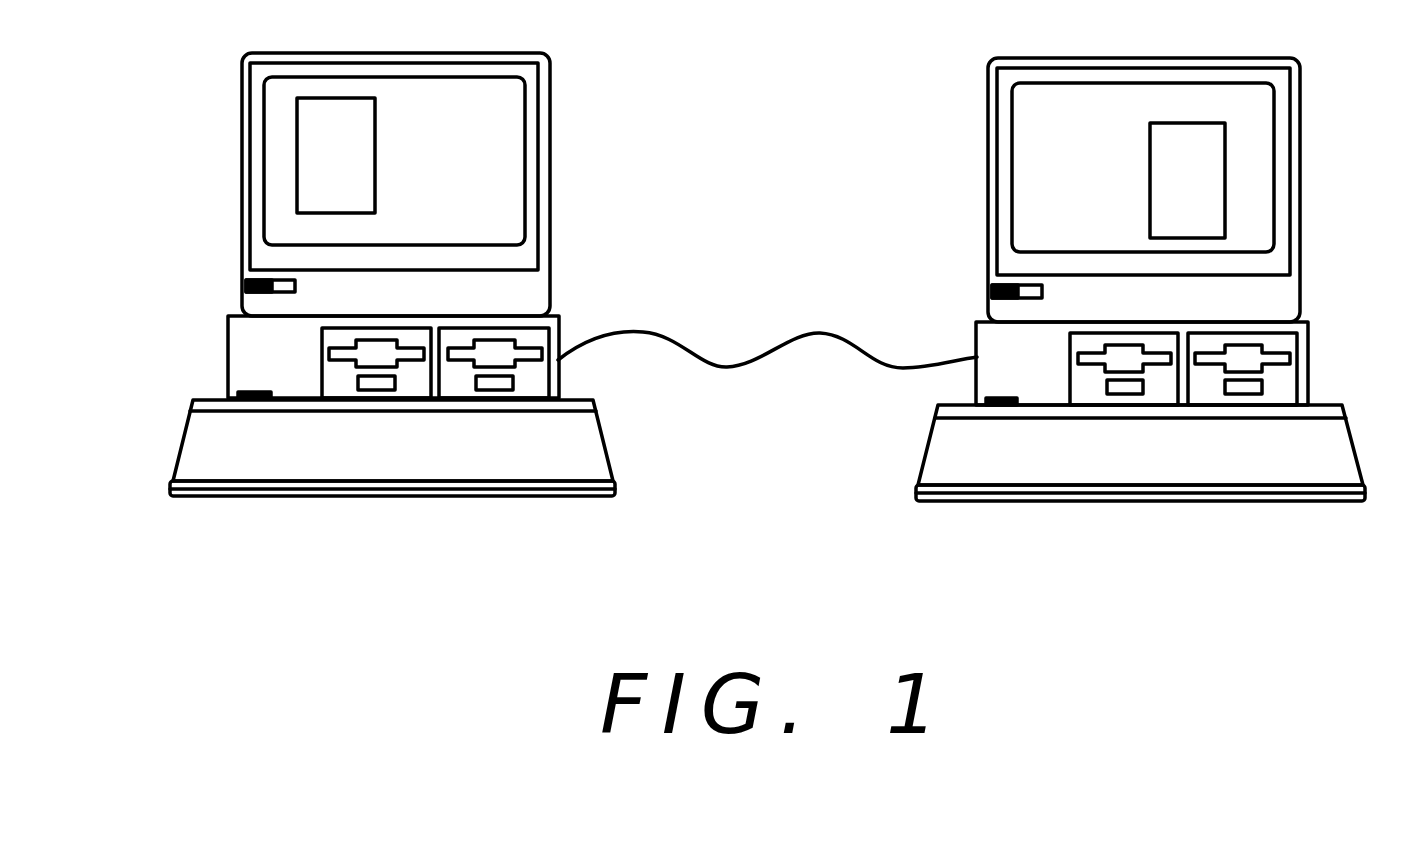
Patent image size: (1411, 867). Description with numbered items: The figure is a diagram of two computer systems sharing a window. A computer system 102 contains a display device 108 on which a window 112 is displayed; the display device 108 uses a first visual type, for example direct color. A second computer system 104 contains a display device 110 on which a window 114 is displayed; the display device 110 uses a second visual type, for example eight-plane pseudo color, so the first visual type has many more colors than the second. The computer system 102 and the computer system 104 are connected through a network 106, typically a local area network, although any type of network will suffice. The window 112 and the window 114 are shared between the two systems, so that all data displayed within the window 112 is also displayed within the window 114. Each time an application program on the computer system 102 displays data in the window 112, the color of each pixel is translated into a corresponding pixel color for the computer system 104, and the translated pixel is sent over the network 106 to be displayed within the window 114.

The computer system 102 is at (388, 272).
The second computer system 104 is at (1153, 273).
The network 106 is at (672, 340).
The display device 108 is at (434, 182).
The display device 110 is at (1184, 184).
The window 112 is at (375, 158).
The window 114 is at (1150, 186).